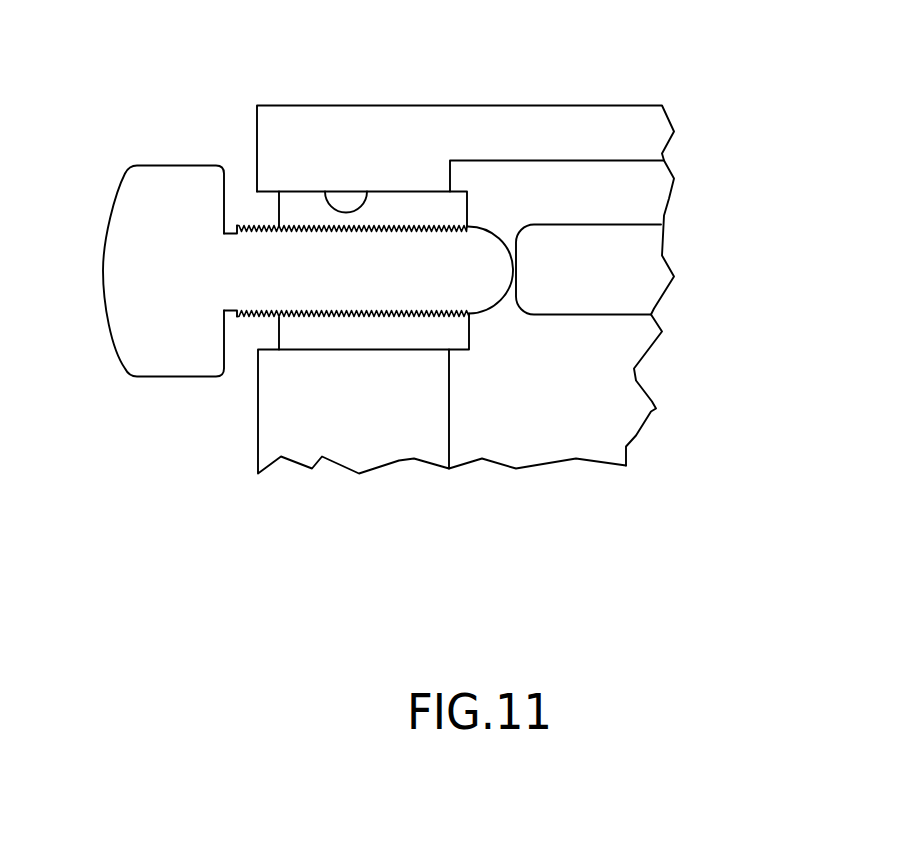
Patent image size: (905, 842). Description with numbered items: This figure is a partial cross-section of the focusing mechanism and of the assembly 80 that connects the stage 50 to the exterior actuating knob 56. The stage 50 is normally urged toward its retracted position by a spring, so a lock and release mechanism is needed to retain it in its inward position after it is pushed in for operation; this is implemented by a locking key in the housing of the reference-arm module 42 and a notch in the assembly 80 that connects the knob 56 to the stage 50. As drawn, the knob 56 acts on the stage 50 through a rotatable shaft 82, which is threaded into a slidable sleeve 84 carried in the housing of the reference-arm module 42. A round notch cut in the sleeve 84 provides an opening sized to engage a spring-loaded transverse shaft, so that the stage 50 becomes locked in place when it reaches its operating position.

The reference-arm module 42 is at (558, 107).
The stage 50 is at (600, 260).
The knob 56 is at (148, 292).
The assembly 80 is at (470, 332).
The rotatable shaft 82 is at (312, 293).
The slidable sleeve 84 is at (310, 208).